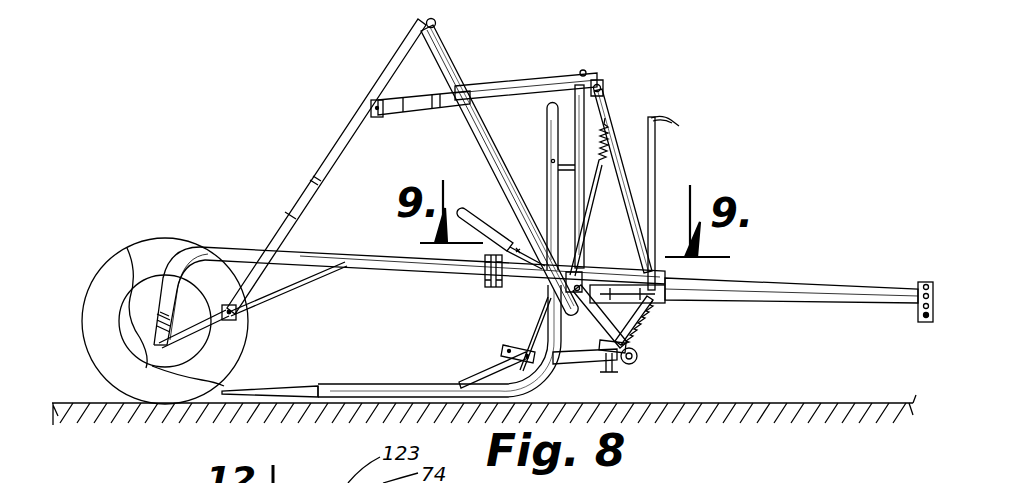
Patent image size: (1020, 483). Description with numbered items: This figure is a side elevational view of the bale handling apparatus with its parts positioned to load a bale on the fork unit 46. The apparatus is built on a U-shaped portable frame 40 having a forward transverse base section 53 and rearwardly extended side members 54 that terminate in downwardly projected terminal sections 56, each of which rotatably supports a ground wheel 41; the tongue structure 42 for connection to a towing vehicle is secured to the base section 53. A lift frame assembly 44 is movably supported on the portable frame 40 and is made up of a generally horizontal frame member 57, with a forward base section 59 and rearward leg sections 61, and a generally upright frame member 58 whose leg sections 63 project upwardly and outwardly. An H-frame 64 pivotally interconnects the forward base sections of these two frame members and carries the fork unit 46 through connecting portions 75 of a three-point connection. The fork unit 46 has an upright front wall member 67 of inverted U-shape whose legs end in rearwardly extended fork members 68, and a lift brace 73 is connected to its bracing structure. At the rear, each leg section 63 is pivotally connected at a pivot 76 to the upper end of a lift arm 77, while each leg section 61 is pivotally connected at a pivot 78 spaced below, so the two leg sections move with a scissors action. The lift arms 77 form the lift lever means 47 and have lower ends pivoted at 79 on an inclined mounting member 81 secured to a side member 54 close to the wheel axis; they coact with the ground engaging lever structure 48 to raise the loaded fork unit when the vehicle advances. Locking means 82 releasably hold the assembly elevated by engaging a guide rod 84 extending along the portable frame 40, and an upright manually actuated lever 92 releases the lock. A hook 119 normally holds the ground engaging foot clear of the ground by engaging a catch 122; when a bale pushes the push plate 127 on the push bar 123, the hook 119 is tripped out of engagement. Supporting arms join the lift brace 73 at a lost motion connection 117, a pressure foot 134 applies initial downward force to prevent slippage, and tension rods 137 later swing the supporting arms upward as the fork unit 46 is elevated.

The portable frame 40 is at (383, 279).
The ground wheel 41 is at (98, 358).
The tongue structure 42 is at (872, 298).
The lift frame assembly 44 is at (528, 62).
The fork unit 46 is at (322, 405).
The lift lever means 47 is at (343, 102).
The ground engaging lever structure 48 is at (622, 374).
The base section 53 is at (668, 278).
The side member 54 is at (366, 252).
The terminal section 56 is at (167, 284).
The horizontal frame member 57 is at (497, 86).
The upright frame member 58 is at (483, 152).
The base section 59 is at (599, 77).
The leg section 61 is at (480, 91).
The leg section 63 is at (440, 47).
The H-frame 64 is at (583, 206).
The front wall member 67 is at (556, 103).
The fork member 68 is at (334, 384).
The lift brace 73 is at (484, 377).
The connecting portion 75 is at (567, 158).
The pivot 76 is at (426, 20).
The lift arm 77 is at (340, 133).
The pivot 78 is at (380, 117).
The pivot 79 is at (237, 318).
The mounting member 81 is at (268, 291).
The locking means 82 is at (670, 308).
The guide rod 84 is at (668, 300).
The lever 92 is at (657, 177).
The lost motion connection 117 is at (508, 347).
The hook 119 is at (640, 352).
The catch 122 is at (633, 368).
The push bar 123 is at (474, 212).
The push plate 127 is at (442, 184).
The pressure foot 134 is at (653, 312).
The tension rod 137 is at (570, 244).